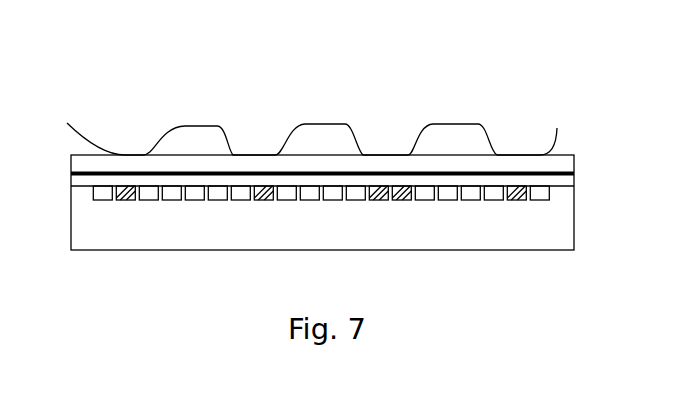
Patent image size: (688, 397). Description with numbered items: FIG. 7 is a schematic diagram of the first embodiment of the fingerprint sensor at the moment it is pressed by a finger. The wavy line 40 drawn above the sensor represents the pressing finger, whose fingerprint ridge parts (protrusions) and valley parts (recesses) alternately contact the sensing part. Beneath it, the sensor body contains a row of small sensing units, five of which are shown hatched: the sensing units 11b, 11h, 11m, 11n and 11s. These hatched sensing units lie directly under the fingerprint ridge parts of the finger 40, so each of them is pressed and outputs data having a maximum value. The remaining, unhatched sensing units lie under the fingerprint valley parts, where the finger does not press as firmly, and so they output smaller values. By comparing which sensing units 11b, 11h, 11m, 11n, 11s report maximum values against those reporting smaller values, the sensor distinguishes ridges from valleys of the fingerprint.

The patterned layer 40 is at (488, 135).
The sensing unit 11b is at (128, 200).
The sensing unit 11h is at (265, 200).
The sensing unit 11m is at (378, 200).
The sensing unit 11n is at (403, 200).
The sensing unit 11s is at (513, 200).